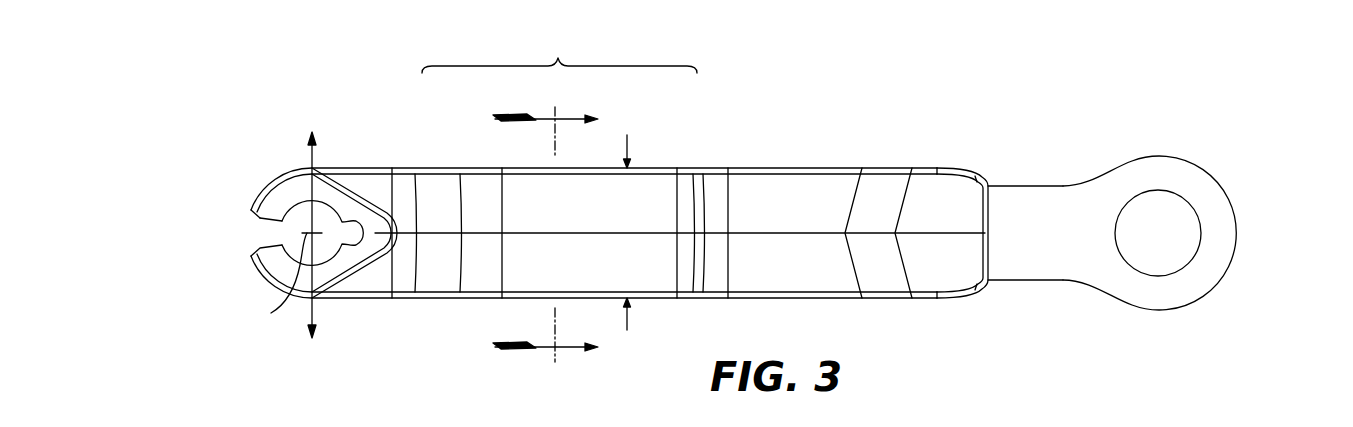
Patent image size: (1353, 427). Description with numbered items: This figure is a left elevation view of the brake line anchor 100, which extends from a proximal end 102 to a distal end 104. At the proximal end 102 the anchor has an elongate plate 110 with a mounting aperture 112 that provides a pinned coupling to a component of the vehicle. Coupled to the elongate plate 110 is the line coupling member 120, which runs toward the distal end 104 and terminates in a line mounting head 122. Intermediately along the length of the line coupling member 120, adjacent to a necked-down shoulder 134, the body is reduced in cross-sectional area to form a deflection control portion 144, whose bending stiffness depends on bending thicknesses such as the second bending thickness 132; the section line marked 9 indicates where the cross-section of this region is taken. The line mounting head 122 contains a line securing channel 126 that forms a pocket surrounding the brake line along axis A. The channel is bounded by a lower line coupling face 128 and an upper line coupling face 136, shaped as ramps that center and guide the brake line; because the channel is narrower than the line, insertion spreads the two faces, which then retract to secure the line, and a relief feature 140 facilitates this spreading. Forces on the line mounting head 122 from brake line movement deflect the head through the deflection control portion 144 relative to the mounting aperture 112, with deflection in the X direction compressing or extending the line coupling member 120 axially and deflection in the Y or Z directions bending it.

The brake line anchor 100 is at (961, 107).
The proximal end 102 is at (1243, 203).
The distal end 104 is at (223, 235).
The elongate plate 110 is at (1028, 225).
The mounting aperture 112 is at (1168, 190).
The line coupling member 120 is at (827, 200).
The line mounting head 122 is at (328, 299).
The line securing channel 126 is at (288, 210).
The lower line coupling face 128 is at (252, 250).
The second bending thickness 132 is at (627, 246).
The necked-down shoulder 134 is at (697, 212).
The upper line coupling face 136 is at (261, 219).
The relief feature 140 is at (374, 206).
The deflection control portion 144 is at (559, 53).
The section line 9- 9 is at (545, 235).